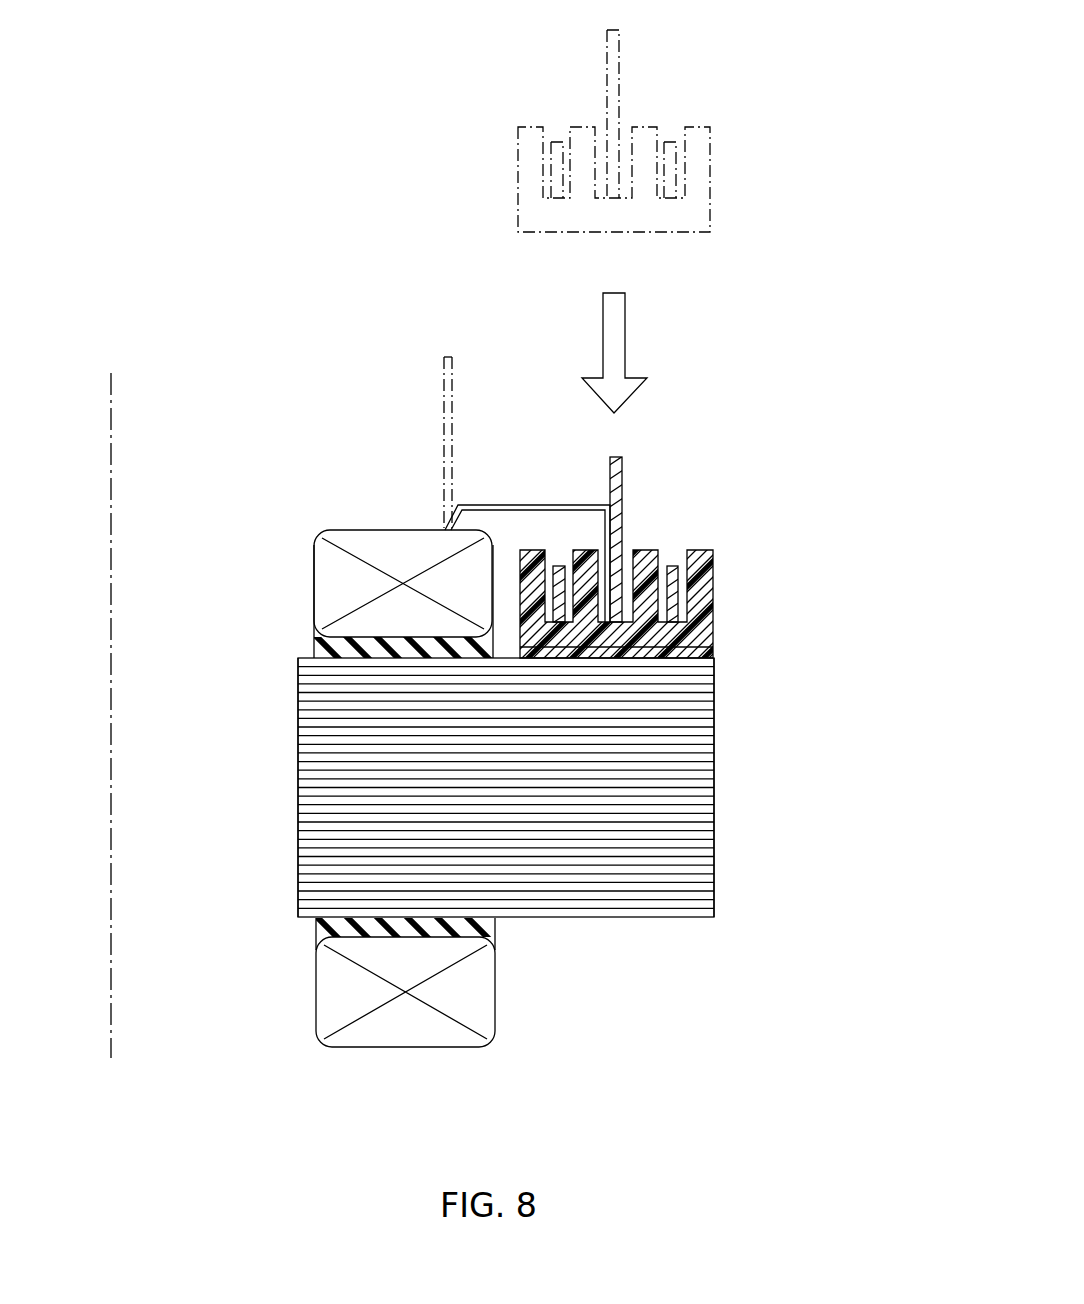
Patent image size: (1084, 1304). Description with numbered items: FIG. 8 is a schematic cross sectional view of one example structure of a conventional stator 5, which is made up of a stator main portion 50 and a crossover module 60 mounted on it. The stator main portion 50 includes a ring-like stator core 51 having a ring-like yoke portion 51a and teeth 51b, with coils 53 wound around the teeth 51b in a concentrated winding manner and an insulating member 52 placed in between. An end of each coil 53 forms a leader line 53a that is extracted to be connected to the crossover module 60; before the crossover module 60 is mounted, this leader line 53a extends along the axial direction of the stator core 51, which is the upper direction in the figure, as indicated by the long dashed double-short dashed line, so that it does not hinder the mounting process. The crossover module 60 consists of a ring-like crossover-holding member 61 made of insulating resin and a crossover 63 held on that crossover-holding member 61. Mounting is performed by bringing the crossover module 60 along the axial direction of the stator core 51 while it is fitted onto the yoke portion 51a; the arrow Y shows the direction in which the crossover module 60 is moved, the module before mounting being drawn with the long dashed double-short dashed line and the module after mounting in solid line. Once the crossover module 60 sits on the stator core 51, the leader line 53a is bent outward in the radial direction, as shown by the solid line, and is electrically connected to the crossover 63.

The stator 5 is at (336, 262).
The stator main portion 50 is at (519, 846).
The stator core 51 is at (707, 719).
The yoke portion 51a is at (593, 815).
The teeth 51b is at (345, 832).
The insulating member 52 is at (305, 646).
The coils 53 is at (338, 567).
The leader line 53a is at (441, 414).
The crossover module 60 is at (710, 180).
The crossover-holding member 61 is at (707, 644).
The crossover 63 is at (622, 472).
The arrow Y is at (625, 337).